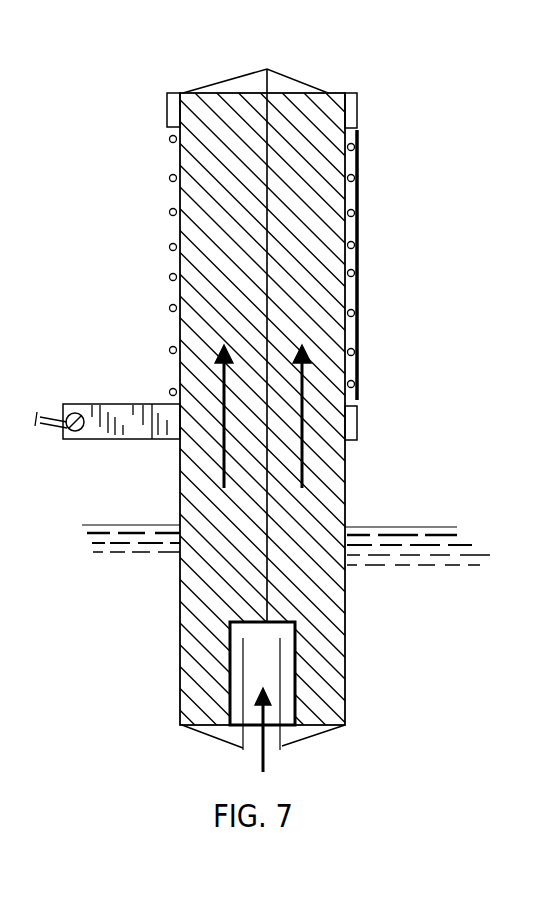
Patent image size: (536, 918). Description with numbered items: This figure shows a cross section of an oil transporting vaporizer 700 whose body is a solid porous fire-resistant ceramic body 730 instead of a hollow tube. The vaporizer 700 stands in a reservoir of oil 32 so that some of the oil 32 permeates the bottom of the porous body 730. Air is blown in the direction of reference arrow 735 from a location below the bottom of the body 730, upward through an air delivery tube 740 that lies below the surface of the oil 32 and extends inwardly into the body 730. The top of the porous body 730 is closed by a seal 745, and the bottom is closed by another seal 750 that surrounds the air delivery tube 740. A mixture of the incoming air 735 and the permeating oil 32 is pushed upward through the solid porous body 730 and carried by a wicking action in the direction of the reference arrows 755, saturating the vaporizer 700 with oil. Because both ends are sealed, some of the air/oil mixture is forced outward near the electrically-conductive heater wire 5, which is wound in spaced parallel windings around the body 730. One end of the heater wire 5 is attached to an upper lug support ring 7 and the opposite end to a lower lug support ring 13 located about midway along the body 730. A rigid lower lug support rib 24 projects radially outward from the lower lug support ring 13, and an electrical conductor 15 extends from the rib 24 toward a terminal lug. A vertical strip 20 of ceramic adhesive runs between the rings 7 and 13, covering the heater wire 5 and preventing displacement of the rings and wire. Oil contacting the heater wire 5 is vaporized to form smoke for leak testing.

The oil transporting vaporizer 700 is at (370, 447).
The solid porous fire resistant body 730 is at (180, 600).
The seal 745 is at (290, 73).
The upper lug support ring 7 is at (357, 112).
The heater wire 5 is at (170, 212).
The vertical strip of adhesive 20 is at (358, 255).
The lower lug support ring 13 is at (357, 422).
The lower lug support rib 24 is at (137, 415).
The electrical conductor 15 is at (40, 422).
The reference arrows 755 is at (226, 432).
The oil 32 is at (373, 527).
The air delivery tube 740 is at (243, 662).
The seal 750 is at (205, 733).
The reference arrow 735 is at (265, 758).